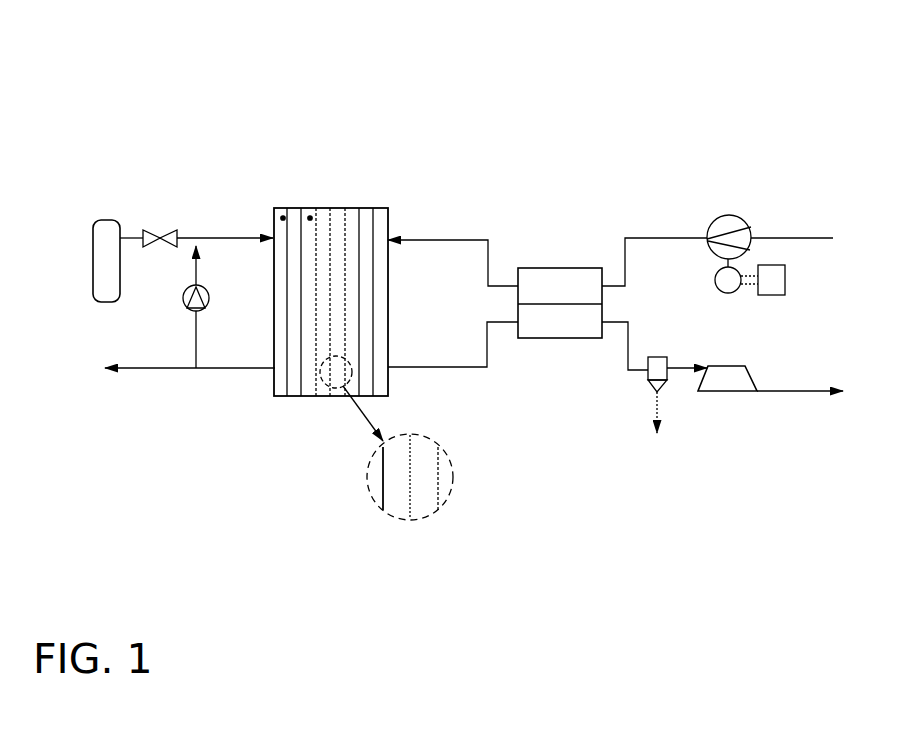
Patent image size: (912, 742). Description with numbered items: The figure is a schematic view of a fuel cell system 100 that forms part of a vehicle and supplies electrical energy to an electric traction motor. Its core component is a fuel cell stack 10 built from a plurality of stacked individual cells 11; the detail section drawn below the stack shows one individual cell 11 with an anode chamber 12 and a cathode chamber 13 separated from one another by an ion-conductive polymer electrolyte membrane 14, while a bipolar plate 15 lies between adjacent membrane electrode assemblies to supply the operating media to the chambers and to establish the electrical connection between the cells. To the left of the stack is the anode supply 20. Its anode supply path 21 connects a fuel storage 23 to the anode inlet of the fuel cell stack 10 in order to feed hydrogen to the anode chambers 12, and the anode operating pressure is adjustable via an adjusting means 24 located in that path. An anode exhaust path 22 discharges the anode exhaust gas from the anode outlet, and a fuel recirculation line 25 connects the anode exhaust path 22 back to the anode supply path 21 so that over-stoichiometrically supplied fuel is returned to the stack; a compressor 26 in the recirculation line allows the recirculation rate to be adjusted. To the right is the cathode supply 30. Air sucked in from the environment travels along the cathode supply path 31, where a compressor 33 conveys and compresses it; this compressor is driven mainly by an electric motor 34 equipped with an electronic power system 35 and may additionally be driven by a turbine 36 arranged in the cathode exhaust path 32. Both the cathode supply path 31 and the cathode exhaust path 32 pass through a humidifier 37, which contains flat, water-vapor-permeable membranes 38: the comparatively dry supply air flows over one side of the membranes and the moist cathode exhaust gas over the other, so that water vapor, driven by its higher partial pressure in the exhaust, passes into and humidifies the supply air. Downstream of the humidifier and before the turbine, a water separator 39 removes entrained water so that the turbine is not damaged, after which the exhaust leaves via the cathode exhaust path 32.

The fuel cell system 100 is at (514, 158).
The fuel cell stack 10 is at (314, 182).
The individual cell 11 is at (310, 217).
The anode chamber 12 is at (396, 507).
The cathode chamber 13 is at (422, 499).
The polymer electrolyte membrane 14 is at (410, 453).
The bipolar plate 15 is at (380, 490).
The anode supply 20 is at (148, 160).
The anode supply path 21 is at (223, 237).
The anode exhaust path 22 is at (139, 369).
The fuel storage 23 is at (104, 229).
The adjusting means 24 is at (148, 236).
The fuel recirculation line 25 is at (196, 343).
The compressor 26 is at (183, 298).
The cathode supply 30 is at (580, 208).
The cathode supply path 31 is at (785, 237).
The cathode exhaust path 32 is at (775, 390).
The compressor 33 is at (723, 221).
The electric motor 34 is at (727, 280).
The electronic power system 35 is at (786, 280).
The turbine 36 is at (730, 383).
The humidifier 37 is at (567, 328).
The membrane 38 is at (542, 303).
The water separator 39 is at (647, 382).